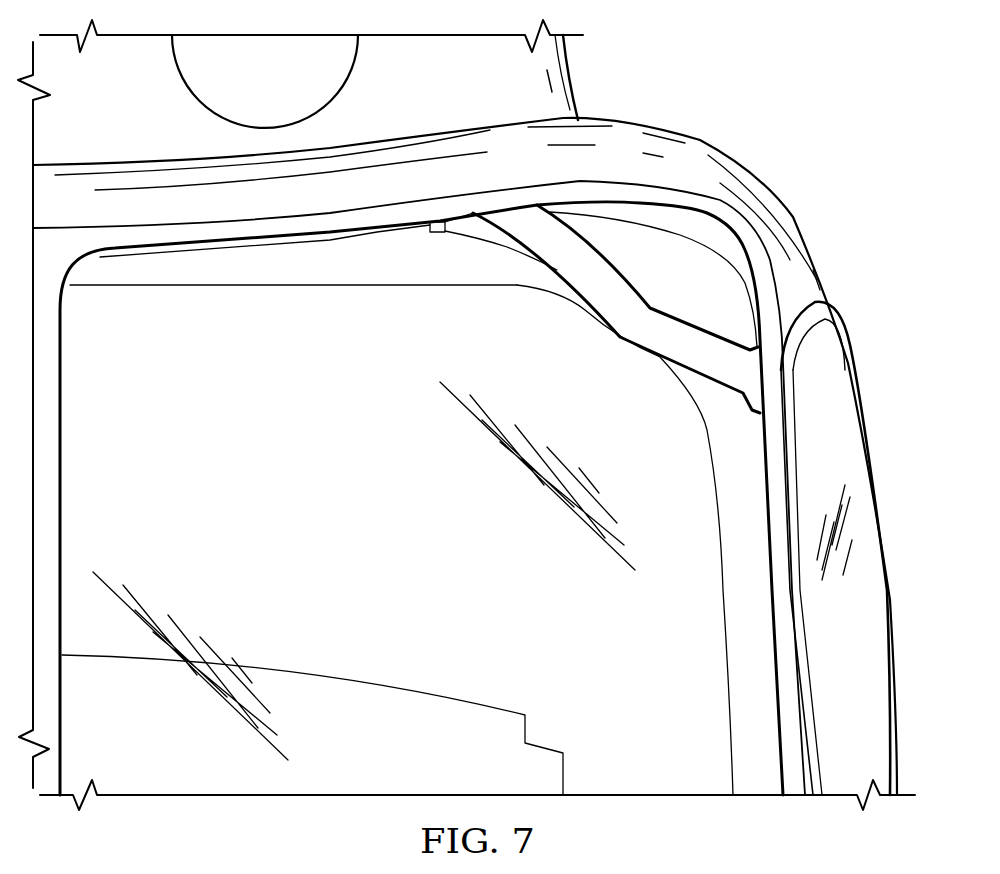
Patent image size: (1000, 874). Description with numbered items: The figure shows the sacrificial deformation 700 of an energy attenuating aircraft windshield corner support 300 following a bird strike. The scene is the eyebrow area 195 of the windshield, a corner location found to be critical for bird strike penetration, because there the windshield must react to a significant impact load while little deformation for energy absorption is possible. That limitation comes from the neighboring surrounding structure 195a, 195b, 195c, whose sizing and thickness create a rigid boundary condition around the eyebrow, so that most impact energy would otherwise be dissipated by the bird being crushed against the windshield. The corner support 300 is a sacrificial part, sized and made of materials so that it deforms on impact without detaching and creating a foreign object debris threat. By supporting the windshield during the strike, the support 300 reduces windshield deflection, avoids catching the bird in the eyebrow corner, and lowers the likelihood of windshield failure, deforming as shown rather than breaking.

The eyebrow area 195 is at (623, 165).
The surrounding structure 195a is at (542, 177).
The surrounding structure 195b is at (668, 187).
The surrounding structure 195c is at (785, 350).
The energy attenuating aircraft windshield corner support 300 is at (537, 267).
The sacrificial deformation 700 is at (620, 347).